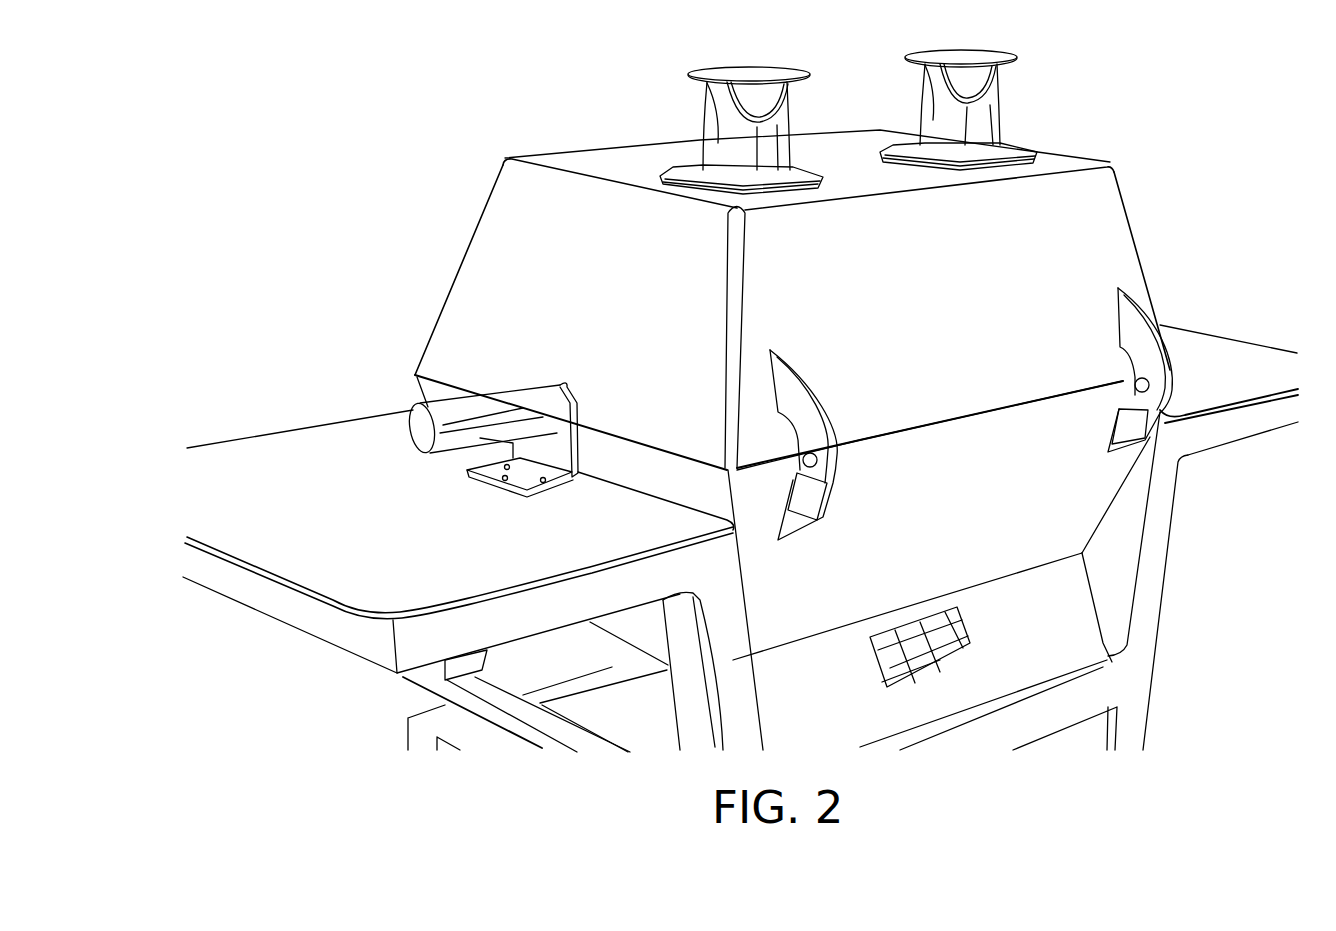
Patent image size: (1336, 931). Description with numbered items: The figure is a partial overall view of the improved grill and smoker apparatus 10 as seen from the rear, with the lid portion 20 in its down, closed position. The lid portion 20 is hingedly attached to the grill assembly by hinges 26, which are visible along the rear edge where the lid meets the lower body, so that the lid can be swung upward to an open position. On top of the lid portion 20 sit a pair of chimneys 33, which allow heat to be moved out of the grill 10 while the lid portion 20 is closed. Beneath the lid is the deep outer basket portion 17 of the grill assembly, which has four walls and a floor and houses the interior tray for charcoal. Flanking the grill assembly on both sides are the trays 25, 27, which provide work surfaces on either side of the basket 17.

The apparatus 10 is at (444, 230).
The deep outer basket portion 17 is at (972, 526).
The lid portion 20 is at (604, 291).
The tray 25 is at (1227, 383).
The hinges 26 is at (807, 395).
The tray 27 is at (407, 573).
The chimneys 33 is at (717, 143).